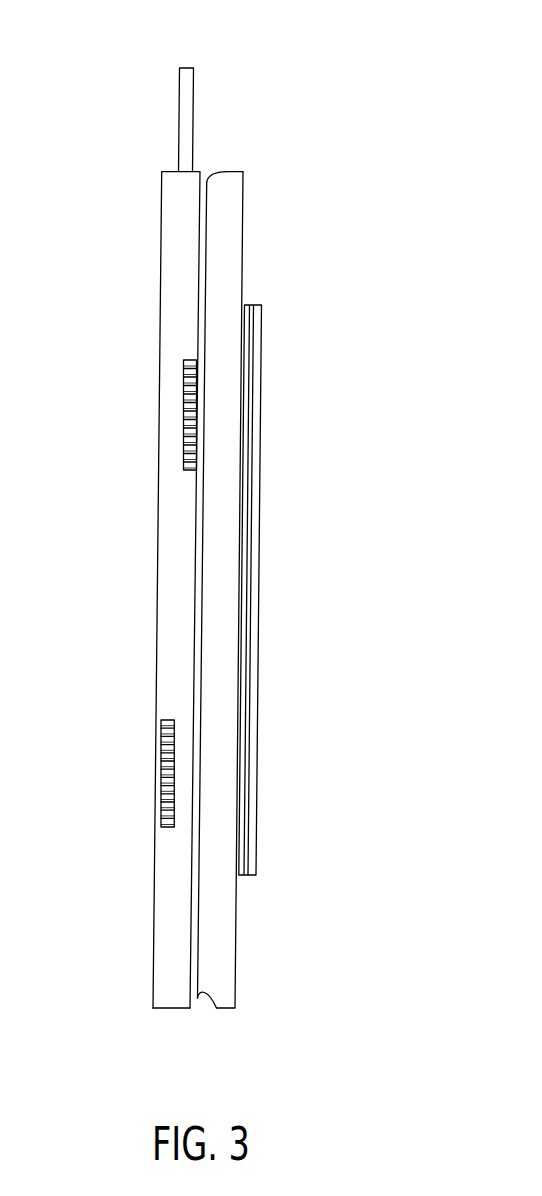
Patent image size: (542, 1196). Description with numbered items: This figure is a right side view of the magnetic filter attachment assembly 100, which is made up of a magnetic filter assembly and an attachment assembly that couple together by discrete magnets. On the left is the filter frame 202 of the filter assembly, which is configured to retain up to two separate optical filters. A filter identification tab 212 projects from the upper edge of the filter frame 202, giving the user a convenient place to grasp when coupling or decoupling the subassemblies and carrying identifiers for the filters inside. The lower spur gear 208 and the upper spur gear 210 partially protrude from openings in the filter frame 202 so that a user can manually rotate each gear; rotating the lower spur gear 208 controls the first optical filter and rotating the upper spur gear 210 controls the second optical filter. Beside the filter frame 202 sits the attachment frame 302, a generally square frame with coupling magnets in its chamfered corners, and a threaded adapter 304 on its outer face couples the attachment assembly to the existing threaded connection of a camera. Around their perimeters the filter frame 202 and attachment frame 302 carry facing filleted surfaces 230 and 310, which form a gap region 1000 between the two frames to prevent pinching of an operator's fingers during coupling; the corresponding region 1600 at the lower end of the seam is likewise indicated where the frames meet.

The magnetic filter attachment assembly 100 is at (75, 103).
The filter frame 202 is at (161, 215).
The filter identification tab 212 is at (194, 118).
The filleted surface 230 is at (207, 179).
The gap region 1000 is at (223, 165).
The attachment frame 302 is at (245, 228).
The threaded adapter 304 is at (262, 377).
The upper spur gear 210 is at (186, 438).
The lower spur gear 208 is at (165, 775).
The filleted surface 310 is at (204, 1000).
The second connector region 1600 is at (195, 1010).